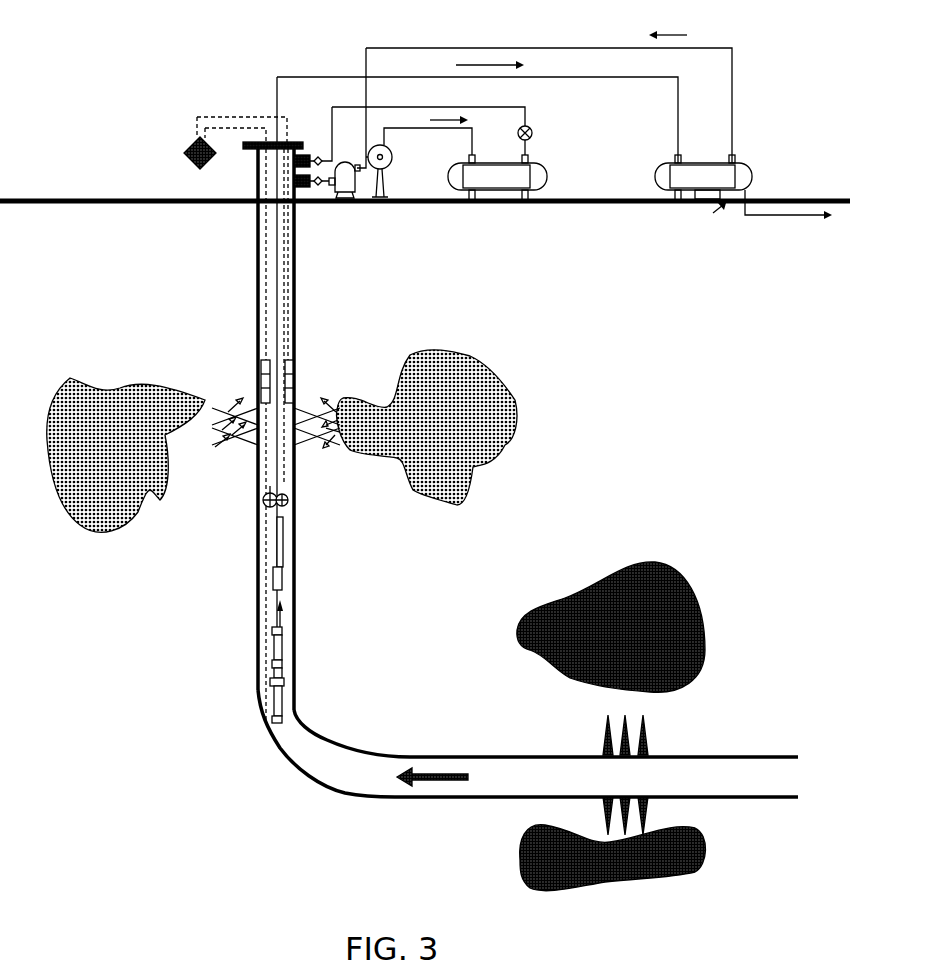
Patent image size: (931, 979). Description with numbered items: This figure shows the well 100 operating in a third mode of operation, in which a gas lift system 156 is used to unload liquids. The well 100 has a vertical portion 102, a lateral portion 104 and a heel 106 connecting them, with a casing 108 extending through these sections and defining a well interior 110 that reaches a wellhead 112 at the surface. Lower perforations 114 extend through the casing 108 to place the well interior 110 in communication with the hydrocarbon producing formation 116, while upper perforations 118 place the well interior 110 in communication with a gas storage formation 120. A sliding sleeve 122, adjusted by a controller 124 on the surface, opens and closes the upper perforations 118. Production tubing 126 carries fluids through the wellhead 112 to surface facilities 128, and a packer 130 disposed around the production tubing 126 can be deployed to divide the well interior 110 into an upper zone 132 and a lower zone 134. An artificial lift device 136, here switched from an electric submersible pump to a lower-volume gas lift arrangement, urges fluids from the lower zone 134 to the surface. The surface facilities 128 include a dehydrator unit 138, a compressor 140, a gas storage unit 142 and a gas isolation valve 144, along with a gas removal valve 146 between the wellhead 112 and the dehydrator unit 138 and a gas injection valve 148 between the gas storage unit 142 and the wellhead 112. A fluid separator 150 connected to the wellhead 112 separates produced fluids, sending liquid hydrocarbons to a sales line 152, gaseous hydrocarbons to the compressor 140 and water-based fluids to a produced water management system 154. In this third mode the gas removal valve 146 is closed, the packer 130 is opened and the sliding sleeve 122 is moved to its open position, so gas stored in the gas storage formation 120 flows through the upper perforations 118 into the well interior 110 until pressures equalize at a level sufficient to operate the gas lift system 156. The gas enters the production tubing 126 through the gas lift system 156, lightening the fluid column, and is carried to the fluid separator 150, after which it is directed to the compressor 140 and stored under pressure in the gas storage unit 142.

The well 100 is at (98, 338).
The vertical portion 102 is at (257, 235).
The lateral portion 104 is at (525, 755).
The heel 106 is at (297, 768).
The casing 108 is at (296, 582).
The well interior 110 is at (284, 523).
The wellhead 112 is at (258, 143).
The lower perforations 114 is at (628, 730).
The hydrocarbon producing formation 116 is at (657, 655).
The upper perforations 118 is at (293, 403).
The gas storage formation 120 is at (142, 452).
The sliding sleeve 122 is at (259, 365).
The controller 124 is at (190, 146).
The production tubing 126 is at (287, 358).
The surface facilities 128 is at (390, 40).
The packer 130 is at (264, 487).
The upper zone 132 is at (257, 317).
The lower zone 134 is at (276, 607).
The artificial lift device 136 is at (268, 677).
The dehydrator unit 138 is at (348, 191).
The compressor 140 is at (392, 175).
The gas storage unit 142 is at (488, 183).
The gas isolation valve 144 is at (532, 139).
The gas removal valve 146 is at (322, 187).
The gas injection valve 148 is at (320, 156).
The fluid separator 150 is at (710, 175).
The sales line 152 is at (805, 218).
The produced water management system 154 is at (718, 212).
The gas lift system 156 is at (284, 545).